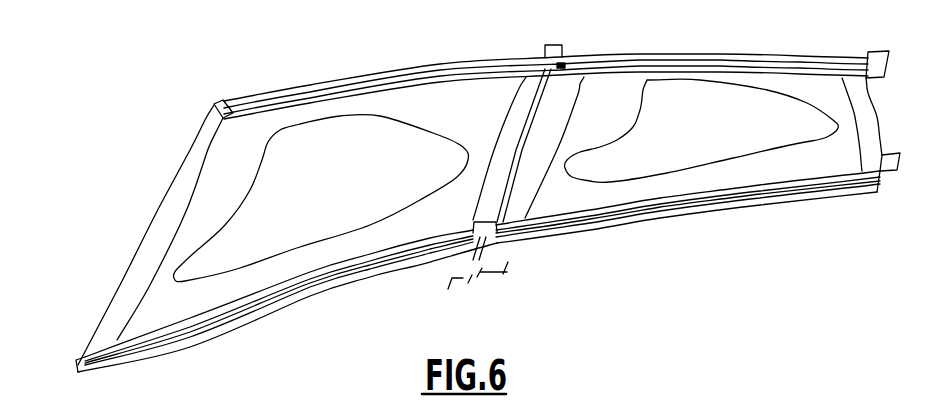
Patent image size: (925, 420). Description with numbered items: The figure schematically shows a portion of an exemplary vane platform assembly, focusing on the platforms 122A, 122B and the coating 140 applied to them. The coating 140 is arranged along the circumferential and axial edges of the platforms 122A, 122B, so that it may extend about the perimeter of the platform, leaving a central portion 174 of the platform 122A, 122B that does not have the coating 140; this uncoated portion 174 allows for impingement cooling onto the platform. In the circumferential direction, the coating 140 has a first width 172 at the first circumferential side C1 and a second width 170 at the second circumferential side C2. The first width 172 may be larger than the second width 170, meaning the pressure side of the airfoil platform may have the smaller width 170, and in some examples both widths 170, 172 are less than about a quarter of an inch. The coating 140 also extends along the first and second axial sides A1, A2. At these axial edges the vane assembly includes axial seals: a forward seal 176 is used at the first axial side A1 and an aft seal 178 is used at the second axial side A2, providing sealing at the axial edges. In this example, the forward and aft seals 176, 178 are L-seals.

The forward seal 176 is at (223, 104).
The first axial side A1 is at (305, 85).
The second circumferential side C2 is at (548, 98).
The first circumferential side C1 is at (553, 98).
The platform 122B is at (762, 172).
The coating 140 is at (93, 340).
The platform 122A is at (192, 310).
The aft seal 178 is at (250, 308).
The second axial side A2 is at (308, 297).
The portion 174 is at (378, 253).
The second width 170 is at (457, 278).
The first width 172 is at (498, 273).